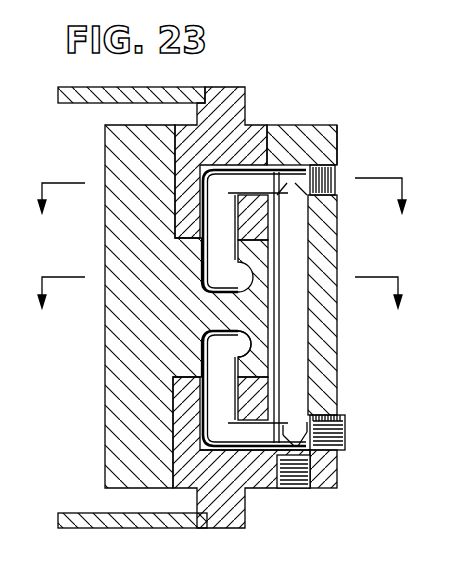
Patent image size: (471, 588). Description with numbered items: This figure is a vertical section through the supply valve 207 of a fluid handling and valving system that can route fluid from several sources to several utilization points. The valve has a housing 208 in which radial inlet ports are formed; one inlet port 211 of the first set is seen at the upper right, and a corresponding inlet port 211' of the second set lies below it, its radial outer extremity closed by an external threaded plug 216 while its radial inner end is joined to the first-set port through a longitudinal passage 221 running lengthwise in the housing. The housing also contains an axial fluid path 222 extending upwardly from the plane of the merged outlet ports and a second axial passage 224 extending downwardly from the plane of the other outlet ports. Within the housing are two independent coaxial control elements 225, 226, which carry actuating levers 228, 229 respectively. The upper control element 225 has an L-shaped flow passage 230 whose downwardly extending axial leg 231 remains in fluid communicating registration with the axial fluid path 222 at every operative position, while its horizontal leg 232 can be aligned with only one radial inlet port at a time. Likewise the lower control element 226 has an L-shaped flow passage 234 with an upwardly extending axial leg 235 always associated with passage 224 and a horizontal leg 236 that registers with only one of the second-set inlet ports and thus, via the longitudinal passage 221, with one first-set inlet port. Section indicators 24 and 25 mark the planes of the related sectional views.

The supply valve 207 is at (318, 125).
The housing 208 is at (334, 133).
The radial inlet port 211 is at (370, 167).
The radial inlet port 211' is at (354, 410).
The external threaded plug 216 is at (333, 438).
The longitudinal passage 221 is at (300, 350).
The axial fluid path 222 is at (212, 350).
The axial passage 224 is at (212, 392).
The control element 225 is at (247, 134).
The control element 226 is at (252, 497).
The actuating lever 228 is at (70, 88).
The actuating lever 229 is at (115, 528).
The L-shaped flow passage 230 is at (202, 188).
The axial leg 231 is at (213, 220).
The horizontal leg 232 is at (253, 170).
The L-shaped flow passage 234 is at (213, 444).
The axial leg 235 is at (213, 418).
The horizontal leg 236 is at (259, 489).
The section line 24- 24 is at (215, 208).
The section line 25- 25 is at (215, 305).